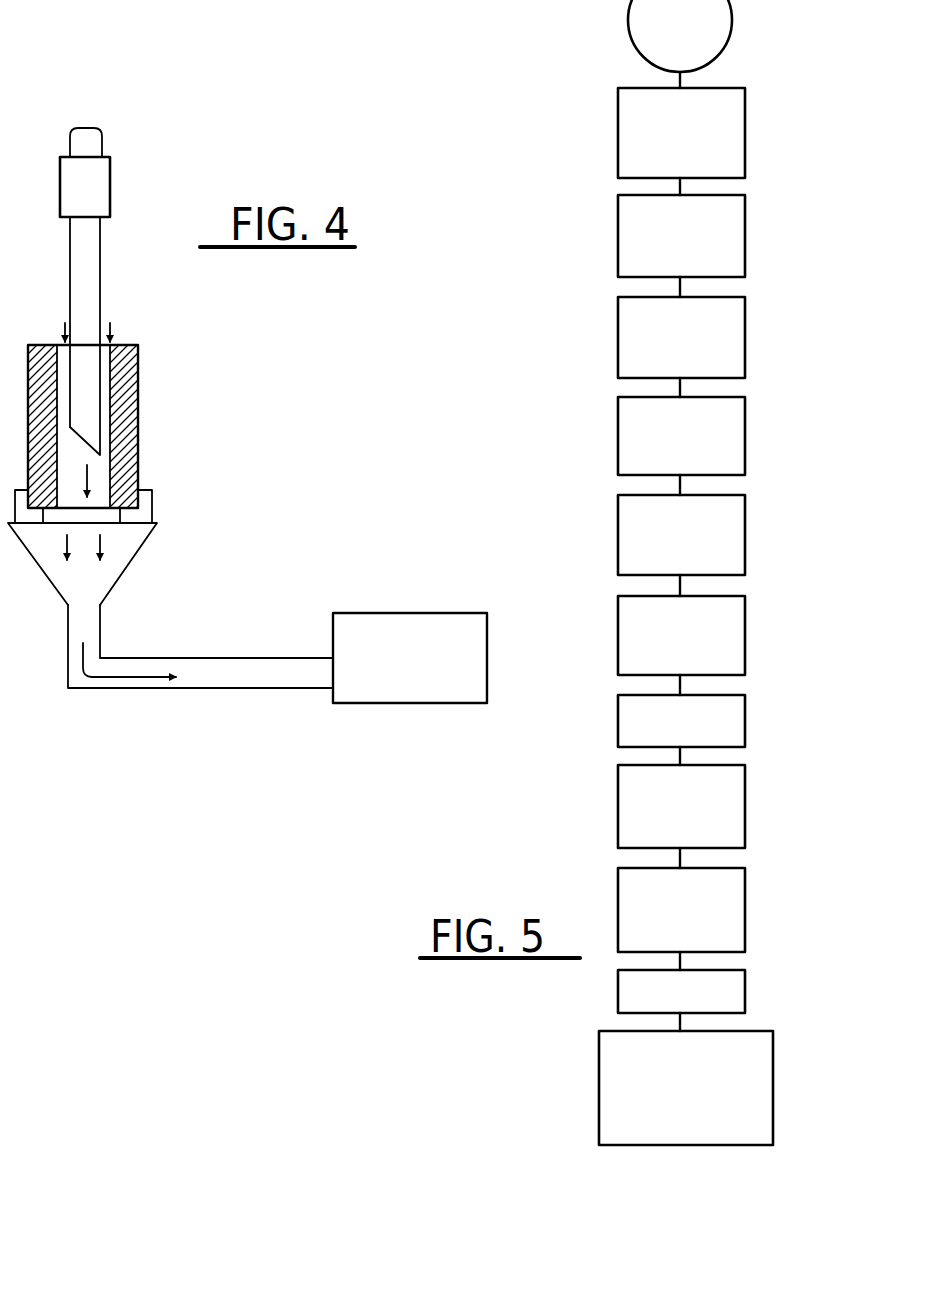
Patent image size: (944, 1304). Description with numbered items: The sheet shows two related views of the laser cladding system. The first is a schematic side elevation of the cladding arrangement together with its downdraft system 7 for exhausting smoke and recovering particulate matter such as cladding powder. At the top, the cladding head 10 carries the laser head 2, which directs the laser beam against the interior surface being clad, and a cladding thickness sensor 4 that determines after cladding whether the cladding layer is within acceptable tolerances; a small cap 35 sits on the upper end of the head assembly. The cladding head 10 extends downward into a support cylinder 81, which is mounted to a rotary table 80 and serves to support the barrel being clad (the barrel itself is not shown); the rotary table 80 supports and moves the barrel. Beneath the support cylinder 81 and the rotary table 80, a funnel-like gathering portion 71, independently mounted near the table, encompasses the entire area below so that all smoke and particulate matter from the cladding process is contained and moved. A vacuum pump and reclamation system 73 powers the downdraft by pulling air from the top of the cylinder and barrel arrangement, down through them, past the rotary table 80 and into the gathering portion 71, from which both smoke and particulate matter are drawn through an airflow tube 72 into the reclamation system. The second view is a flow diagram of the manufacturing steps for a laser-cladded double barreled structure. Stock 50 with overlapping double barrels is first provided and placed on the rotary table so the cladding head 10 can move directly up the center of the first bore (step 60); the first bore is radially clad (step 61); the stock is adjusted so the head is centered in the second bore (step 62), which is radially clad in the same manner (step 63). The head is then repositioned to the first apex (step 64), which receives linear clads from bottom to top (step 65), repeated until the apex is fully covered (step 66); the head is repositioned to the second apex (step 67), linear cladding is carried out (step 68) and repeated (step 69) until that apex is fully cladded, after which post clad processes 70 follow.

In FIG. 4, the laser head 2 is at (100, 262).
In FIG. 4, the cladding thickness sensor 4 is at (110, 200).
In FIG. 4, the downdraft system 7 is at (170, 629).
In FIG. 4, the cladding head 10 is at (70, 257).
In FIG. 4, the tube cap 35 is at (94, 131).
In FIG. 5, the stock 50 is at (732, 22).
In FIG. 5, the step 60 is at (745, 136).
In FIG. 5, the step 61 is at (745, 228).
In FIG. 5, the step 62 is at (745, 340).
In FIG. 5, the step 63 is at (745, 437).
In FIG. 5, the step 64 is at (745, 535).
In FIG. 5, the step 65 is at (745, 625).
In FIG. 5, the step 66 is at (745, 719).
In FIG. 5, the step 67 is at (745, 803).
In FIG. 5, the step 68 is at (745, 906).
In FIG. 5, the step 69 is at (745, 990).
In FIG. 5, the post clad processes step 70 is at (773, 1058).
In FIG. 4, the gathering portion 71 is at (150, 530).
In FIG. 4, the airflow tube 72 is at (130, 690).
In FIG. 4, the vacuum pump and reclamation system 73 is at (395, 703).
In FIG. 4, the rotary table 80 is at (152, 498).
In FIG. 4, the support cylinder 81 is at (138, 418).